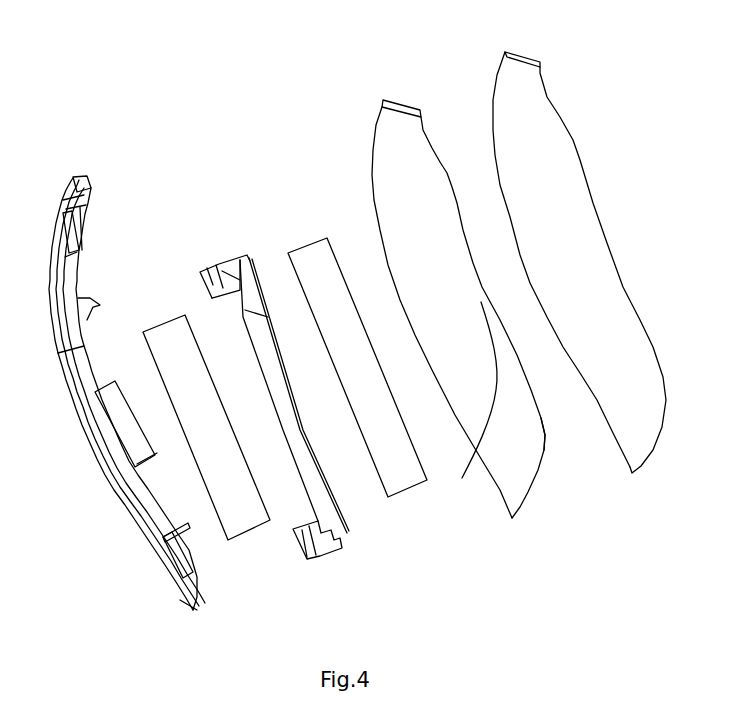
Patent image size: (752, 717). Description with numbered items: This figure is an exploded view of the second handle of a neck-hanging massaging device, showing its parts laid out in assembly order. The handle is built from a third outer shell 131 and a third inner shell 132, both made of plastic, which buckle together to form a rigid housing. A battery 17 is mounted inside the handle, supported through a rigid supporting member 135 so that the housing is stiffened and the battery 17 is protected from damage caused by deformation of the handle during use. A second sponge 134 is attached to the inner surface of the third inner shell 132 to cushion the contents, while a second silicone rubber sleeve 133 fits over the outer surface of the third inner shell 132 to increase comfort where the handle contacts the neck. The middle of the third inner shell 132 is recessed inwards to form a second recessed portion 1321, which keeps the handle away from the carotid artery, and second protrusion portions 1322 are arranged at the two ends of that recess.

The third outer shell 131 is at (105, 458).
The battery 17 is at (237, 523).
The rigid supporting member 135 is at (233, 250).
The second sponge 134 is at (308, 247).
The third inner shell 132 is at (425, 182).
The second recessed portion 1321 is at (462, 478).
The second protrusion portions 1322 is at (548, 433).
The second silicone rubber sleeve 133 is at (545, 133).